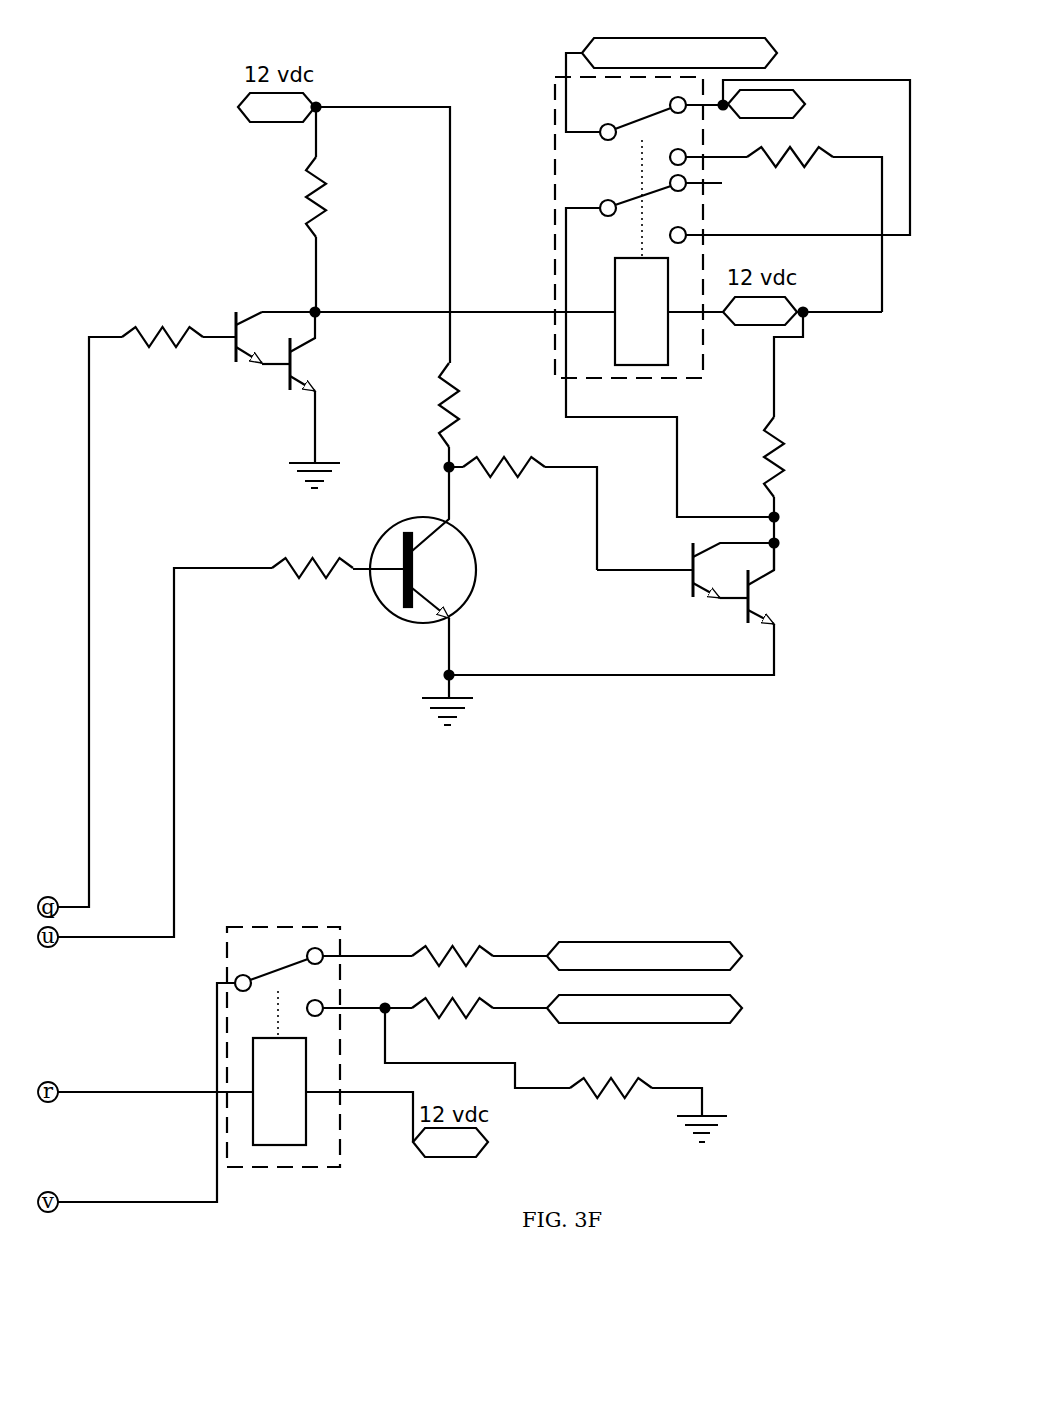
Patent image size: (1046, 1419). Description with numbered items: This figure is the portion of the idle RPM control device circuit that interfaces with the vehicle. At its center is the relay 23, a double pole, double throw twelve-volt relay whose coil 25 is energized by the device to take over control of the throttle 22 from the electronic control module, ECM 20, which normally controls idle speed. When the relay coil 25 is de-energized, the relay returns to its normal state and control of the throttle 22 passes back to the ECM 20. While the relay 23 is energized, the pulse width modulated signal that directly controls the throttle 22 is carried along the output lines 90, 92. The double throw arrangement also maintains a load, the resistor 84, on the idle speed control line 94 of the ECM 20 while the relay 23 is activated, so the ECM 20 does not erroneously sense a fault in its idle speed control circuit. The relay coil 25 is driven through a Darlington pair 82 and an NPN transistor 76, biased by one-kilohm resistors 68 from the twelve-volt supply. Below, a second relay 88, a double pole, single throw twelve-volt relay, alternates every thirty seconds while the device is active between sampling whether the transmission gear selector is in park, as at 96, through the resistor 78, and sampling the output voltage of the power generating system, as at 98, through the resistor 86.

The electronic control module (ECM) 20 is at (650, 52).
The throttle 22 is at (783, 100).
The relay 23 is at (555, 80).
The relay coil 25 is at (615, 328).
The resistor 68 is at (328, 213).
The NPN transistor 76 is at (393, 615).
The resistor 78 is at (447, 947).
The Darlington pair 82 is at (277, 365).
The resistor 84 is at (808, 165).
The resistor 86 is at (460, 1007).
The relay 88 is at (270, 925).
The output line 90 is at (566, 240).
The output line 92 is at (857, 80).
The idle speed control line 94 is at (566, 97).
The park condition input 96 is at (578, 952).
The power generating system output voltage input 98 is at (687, 1000).